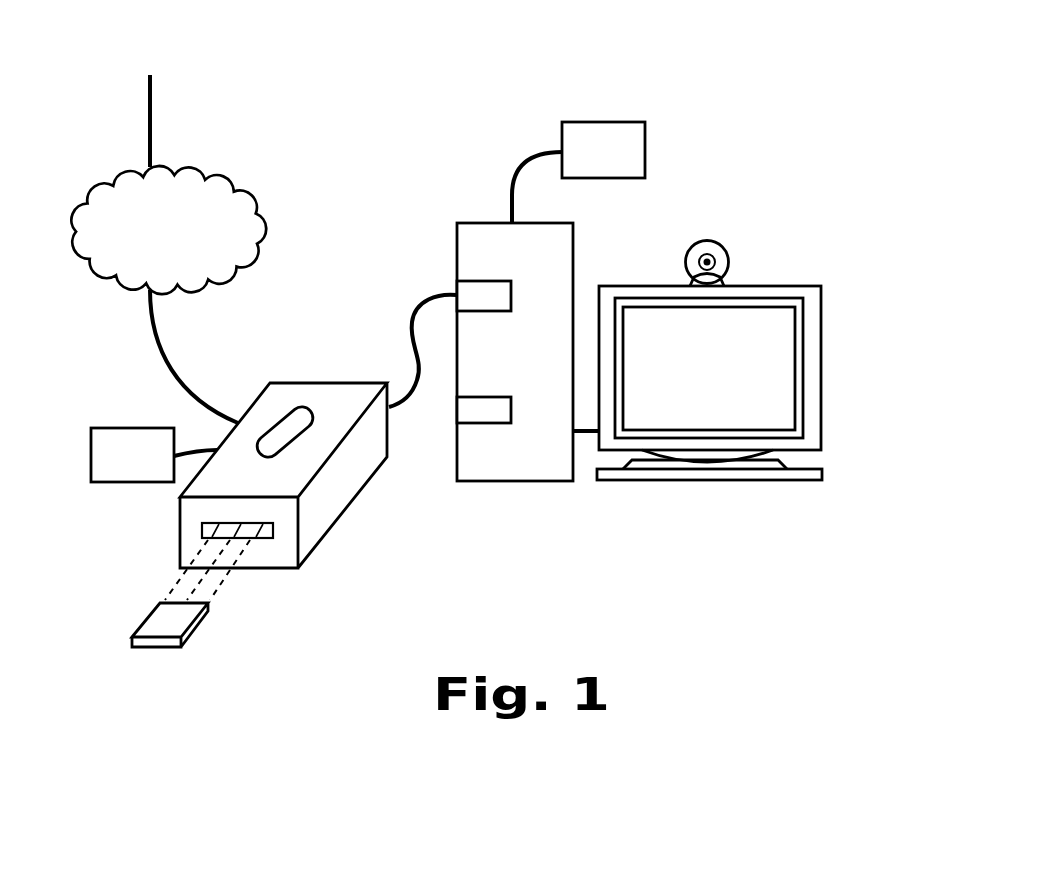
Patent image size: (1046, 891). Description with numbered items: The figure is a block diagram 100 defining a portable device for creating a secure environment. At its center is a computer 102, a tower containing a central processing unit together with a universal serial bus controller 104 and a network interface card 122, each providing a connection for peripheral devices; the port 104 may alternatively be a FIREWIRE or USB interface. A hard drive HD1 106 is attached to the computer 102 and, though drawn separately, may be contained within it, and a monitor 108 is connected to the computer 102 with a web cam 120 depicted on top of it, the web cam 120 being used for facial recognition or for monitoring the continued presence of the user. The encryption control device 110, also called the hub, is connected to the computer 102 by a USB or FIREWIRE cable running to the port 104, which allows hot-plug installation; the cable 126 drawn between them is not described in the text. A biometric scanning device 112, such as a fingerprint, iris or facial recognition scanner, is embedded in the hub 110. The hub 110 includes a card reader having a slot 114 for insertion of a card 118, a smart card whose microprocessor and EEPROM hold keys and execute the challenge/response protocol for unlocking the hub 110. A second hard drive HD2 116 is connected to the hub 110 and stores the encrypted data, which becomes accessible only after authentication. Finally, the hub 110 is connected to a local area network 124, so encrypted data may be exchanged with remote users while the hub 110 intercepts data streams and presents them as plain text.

The block diagram 100 is at (833, 101).
The computer 102 is at (533, 481).
The universal serial bus (USB) controller 104 is at (485, 281).
The hard drive (HD1) 106 is at (610, 122).
The monitor 108 is at (821, 413).
The encryption control device 110 is at (305, 558).
The biometric scanning device 112 is at (303, 435).
The slot 114 is at (202, 530).
The hard drive (HD2) 116 is at (135, 428).
The card 118 is at (190, 637).
The web cam 120 is at (713, 240).
The network interface card (NIC) 122 is at (500, 423).
The local area network (LAN) 124 is at (247, 186).
The cable 126 is at (417, 303).